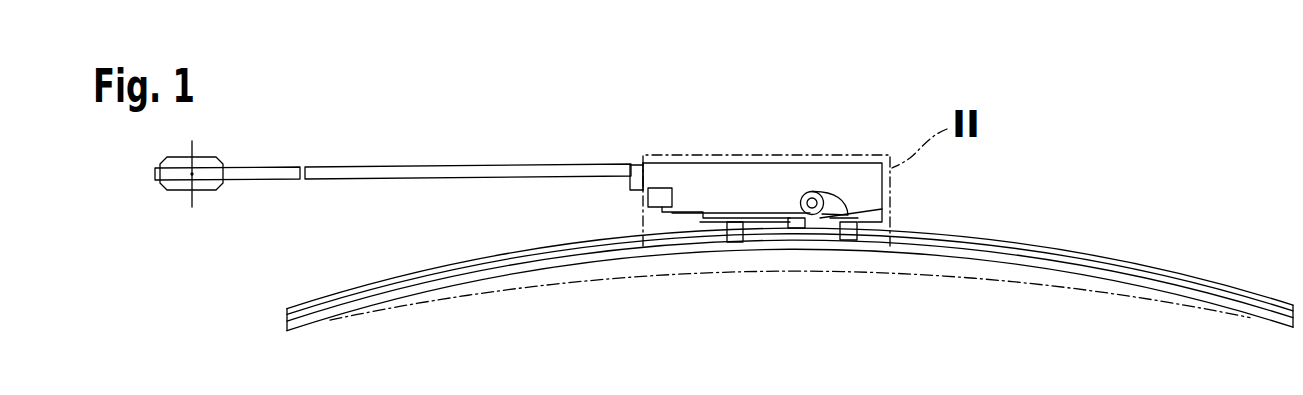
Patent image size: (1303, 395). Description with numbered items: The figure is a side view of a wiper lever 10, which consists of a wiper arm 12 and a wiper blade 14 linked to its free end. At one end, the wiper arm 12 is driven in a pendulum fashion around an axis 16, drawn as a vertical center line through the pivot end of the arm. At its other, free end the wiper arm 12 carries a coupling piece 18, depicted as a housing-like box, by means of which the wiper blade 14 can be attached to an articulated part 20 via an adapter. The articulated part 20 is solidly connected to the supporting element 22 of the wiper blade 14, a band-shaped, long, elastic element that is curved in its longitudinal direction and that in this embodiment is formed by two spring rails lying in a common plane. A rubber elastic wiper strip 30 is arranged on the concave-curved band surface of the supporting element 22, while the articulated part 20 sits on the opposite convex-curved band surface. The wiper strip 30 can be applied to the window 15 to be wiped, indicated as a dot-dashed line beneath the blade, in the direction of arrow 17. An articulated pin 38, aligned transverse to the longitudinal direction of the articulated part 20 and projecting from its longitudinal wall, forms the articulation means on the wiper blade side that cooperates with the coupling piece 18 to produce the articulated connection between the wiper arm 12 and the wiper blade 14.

The wiper lever 10 is at (1075, 84).
The wiper arm 12 is at (362, 163).
The wiper blade 14 is at (1027, 240).
The window 15 is at (690, 276).
The axis 16 is at (192, 200).
The arrow 17 is at (812, 148).
The coupling piece 18 is at (857, 152).
The articulated part 20 is at (713, 225).
The supporting element 22 is at (1140, 267).
The wiper strip 30 is at (917, 246).
The articulated pin 38 is at (805, 218).